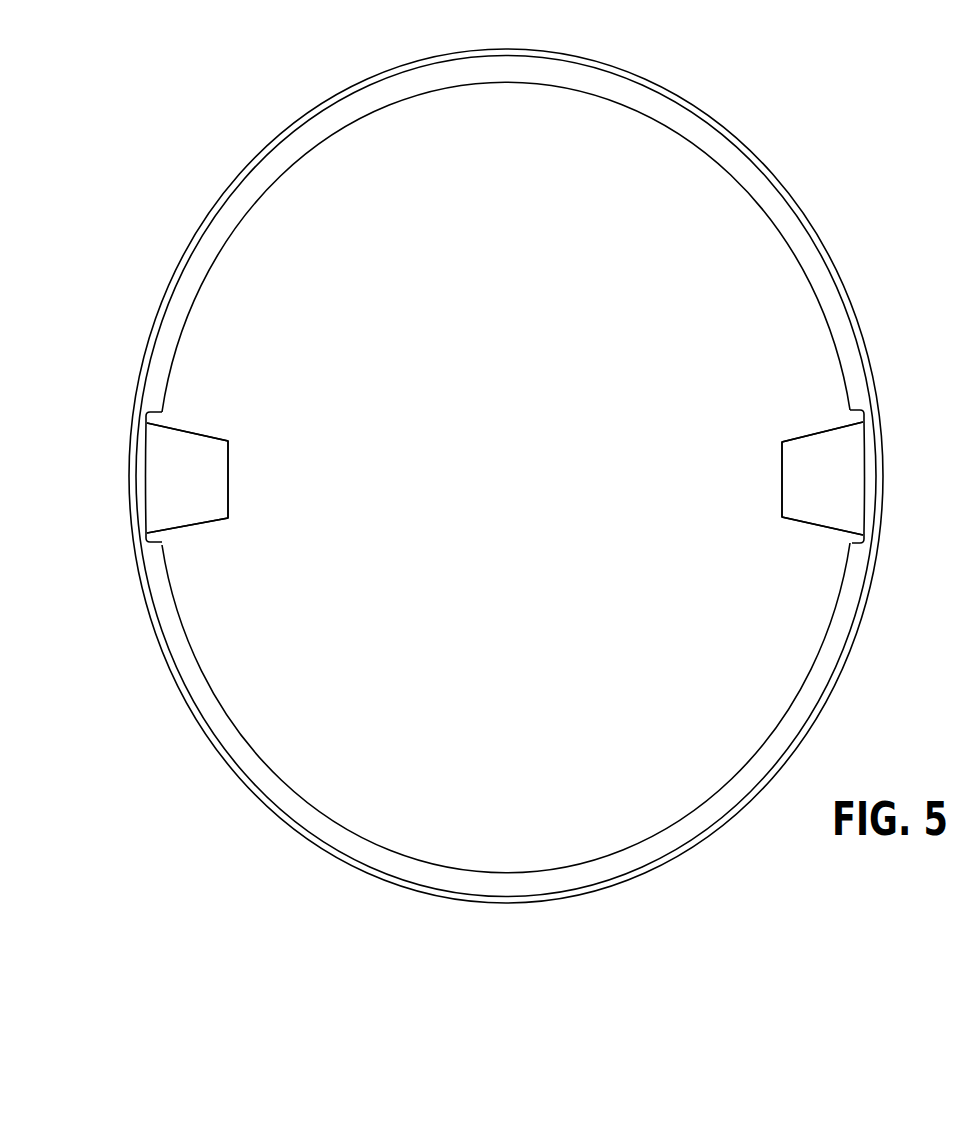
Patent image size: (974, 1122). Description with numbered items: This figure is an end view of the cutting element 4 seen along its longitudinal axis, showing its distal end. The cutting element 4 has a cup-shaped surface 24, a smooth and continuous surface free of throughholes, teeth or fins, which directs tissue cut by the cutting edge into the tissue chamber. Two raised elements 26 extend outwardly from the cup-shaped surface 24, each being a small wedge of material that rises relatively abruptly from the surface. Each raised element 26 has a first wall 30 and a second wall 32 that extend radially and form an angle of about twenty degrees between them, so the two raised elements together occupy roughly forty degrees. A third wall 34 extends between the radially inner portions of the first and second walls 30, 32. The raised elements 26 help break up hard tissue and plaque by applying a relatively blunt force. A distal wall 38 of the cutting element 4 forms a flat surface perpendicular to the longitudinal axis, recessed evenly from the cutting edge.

The cutting element 4 is at (817, 128).
The cup-shaped surface 24 is at (715, 290).
The raised element 26 is at (157, 489).
The first wall 30 is at (198, 524).
The second wall 32 is at (188, 431).
The third wall 34 is at (231, 479).
The distal wall 38 is at (212, 448).